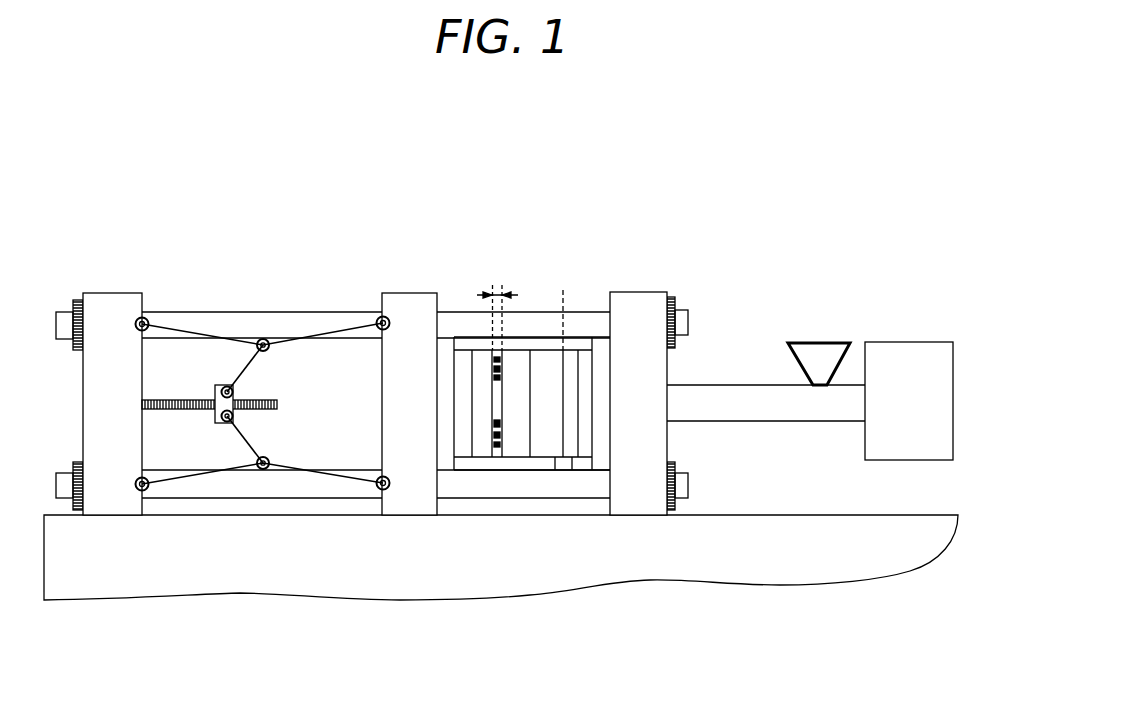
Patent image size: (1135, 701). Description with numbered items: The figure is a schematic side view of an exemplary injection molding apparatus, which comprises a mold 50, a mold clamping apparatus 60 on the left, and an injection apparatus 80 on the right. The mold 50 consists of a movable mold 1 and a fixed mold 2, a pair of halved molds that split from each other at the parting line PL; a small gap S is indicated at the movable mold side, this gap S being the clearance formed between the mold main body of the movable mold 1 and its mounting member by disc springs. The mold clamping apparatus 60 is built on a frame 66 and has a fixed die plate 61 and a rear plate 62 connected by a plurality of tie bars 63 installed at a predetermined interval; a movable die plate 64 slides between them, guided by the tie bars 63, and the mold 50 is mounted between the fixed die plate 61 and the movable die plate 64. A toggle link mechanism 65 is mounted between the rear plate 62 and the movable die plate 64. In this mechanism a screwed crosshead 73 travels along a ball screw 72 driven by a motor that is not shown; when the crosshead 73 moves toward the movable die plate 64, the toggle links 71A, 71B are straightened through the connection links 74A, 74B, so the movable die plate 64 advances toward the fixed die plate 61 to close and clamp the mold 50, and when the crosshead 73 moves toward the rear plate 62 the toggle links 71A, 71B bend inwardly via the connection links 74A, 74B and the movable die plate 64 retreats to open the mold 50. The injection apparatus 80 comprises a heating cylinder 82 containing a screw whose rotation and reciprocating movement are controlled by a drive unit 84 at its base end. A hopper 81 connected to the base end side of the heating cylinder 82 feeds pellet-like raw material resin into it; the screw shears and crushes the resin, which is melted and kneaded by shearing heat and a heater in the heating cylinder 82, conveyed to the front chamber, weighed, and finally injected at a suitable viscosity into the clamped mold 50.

The movable mold 1 is at (550, 360).
The fixed mold 2 is at (578, 360).
The mold 50 is at (533, 329).
The mold clamping apparatus 60 is at (256, 254).
The fixed die plate 61 is at (639, 305).
The rear plate 62 is at (113, 305).
The tie bar 63 is at (312, 322).
The movable die plate 64 is at (408, 305).
The toggle link mechanism 65 is at (263, 404).
The frame 66 is at (207, 558).
The toggle link 71A is at (272, 346).
The toggle link 71B is at (272, 463).
The ball screw 72 is at (262, 397).
The crosshead 73 is at (235, 415).
The connection link 74A is at (248, 368).
The connection link 74B is at (278, 439).
The injection apparatus 80 is at (810, 319).
The hopper 81 is at (822, 353).
The heating cylinder 82 is at (755, 397).
The drive unit 84 is at (908, 353).
The gap S is at (497, 357).
The parting line PL is at (563, 362).